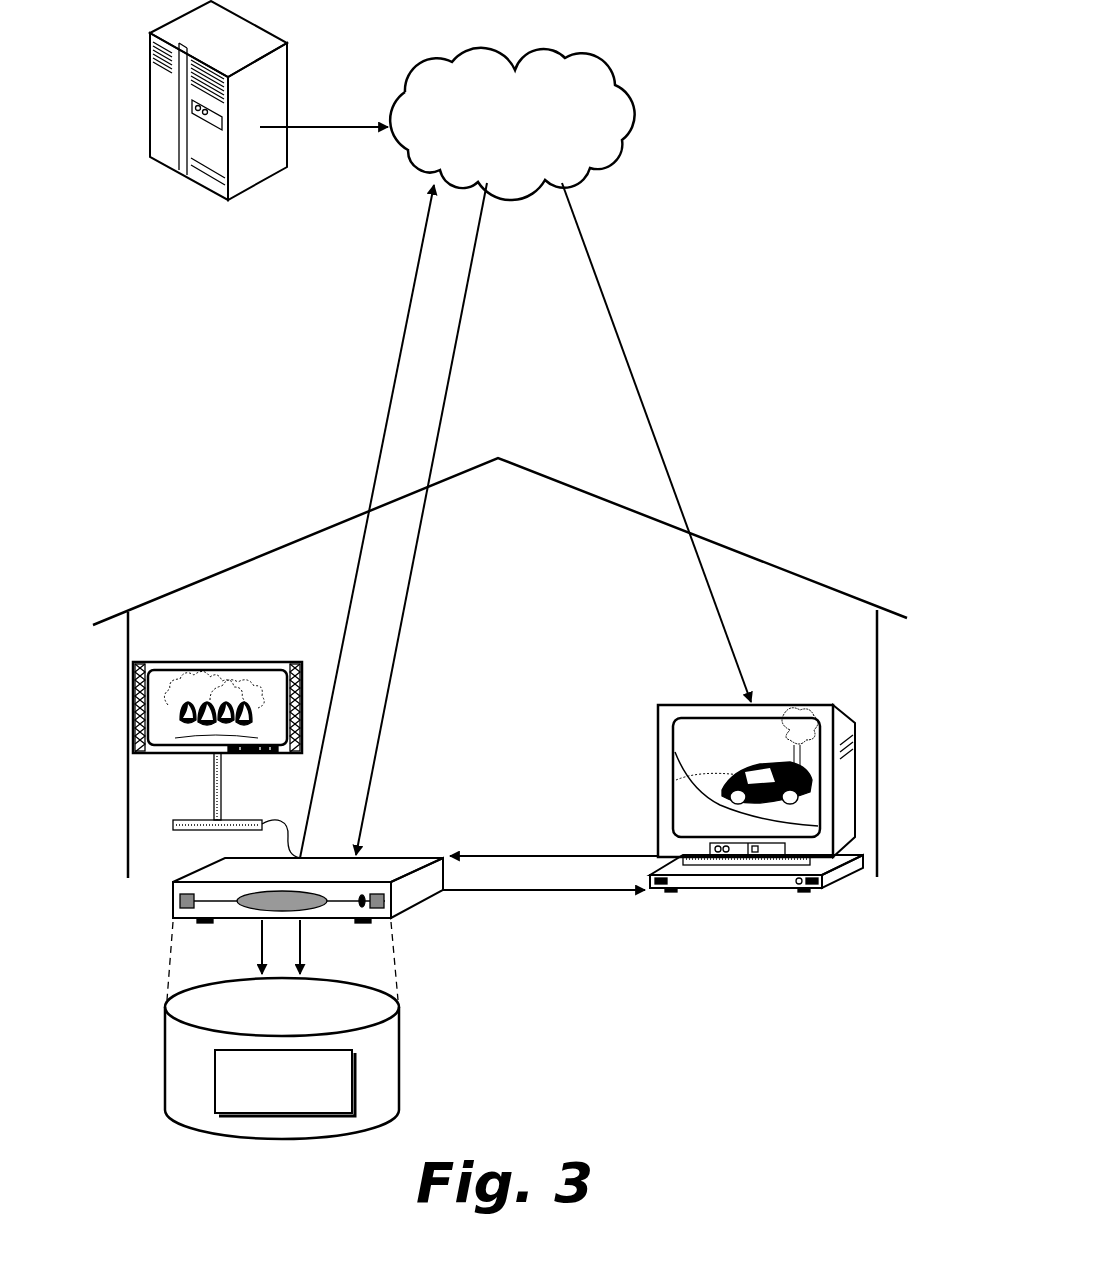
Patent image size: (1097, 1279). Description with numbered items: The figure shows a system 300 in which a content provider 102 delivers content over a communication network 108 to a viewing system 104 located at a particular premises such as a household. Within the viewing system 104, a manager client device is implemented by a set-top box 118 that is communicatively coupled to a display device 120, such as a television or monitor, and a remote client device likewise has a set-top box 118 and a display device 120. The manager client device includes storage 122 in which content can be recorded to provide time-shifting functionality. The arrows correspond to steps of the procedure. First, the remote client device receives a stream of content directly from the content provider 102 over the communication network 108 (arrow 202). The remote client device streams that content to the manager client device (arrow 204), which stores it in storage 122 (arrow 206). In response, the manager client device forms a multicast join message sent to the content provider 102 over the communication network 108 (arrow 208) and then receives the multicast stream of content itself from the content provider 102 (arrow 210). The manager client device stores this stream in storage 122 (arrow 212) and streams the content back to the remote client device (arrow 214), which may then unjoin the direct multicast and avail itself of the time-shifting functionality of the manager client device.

The system 300 is at (687, 53).
The content provider 102 is at (265, 132).
The communication network 108 is at (512, 124).
The viewing system 104 is at (228, 530).
The multicast join message forming step 208 is at (388, 428).
The stream reception step 210 is at (441, 425).
The direct stream reception step 202 is at (645, 405).
The display device 120 is at (245, 660).
The set-top box 118 is at (378, 858).
The content storing step 206 is at (258, 965).
The stream storing step 212 is at (304, 965).
The content streaming step to manager 204 is at (528, 855).
The content streaming step to remote 214 is at (527, 890).
The storage 122 is at (282, 1058).